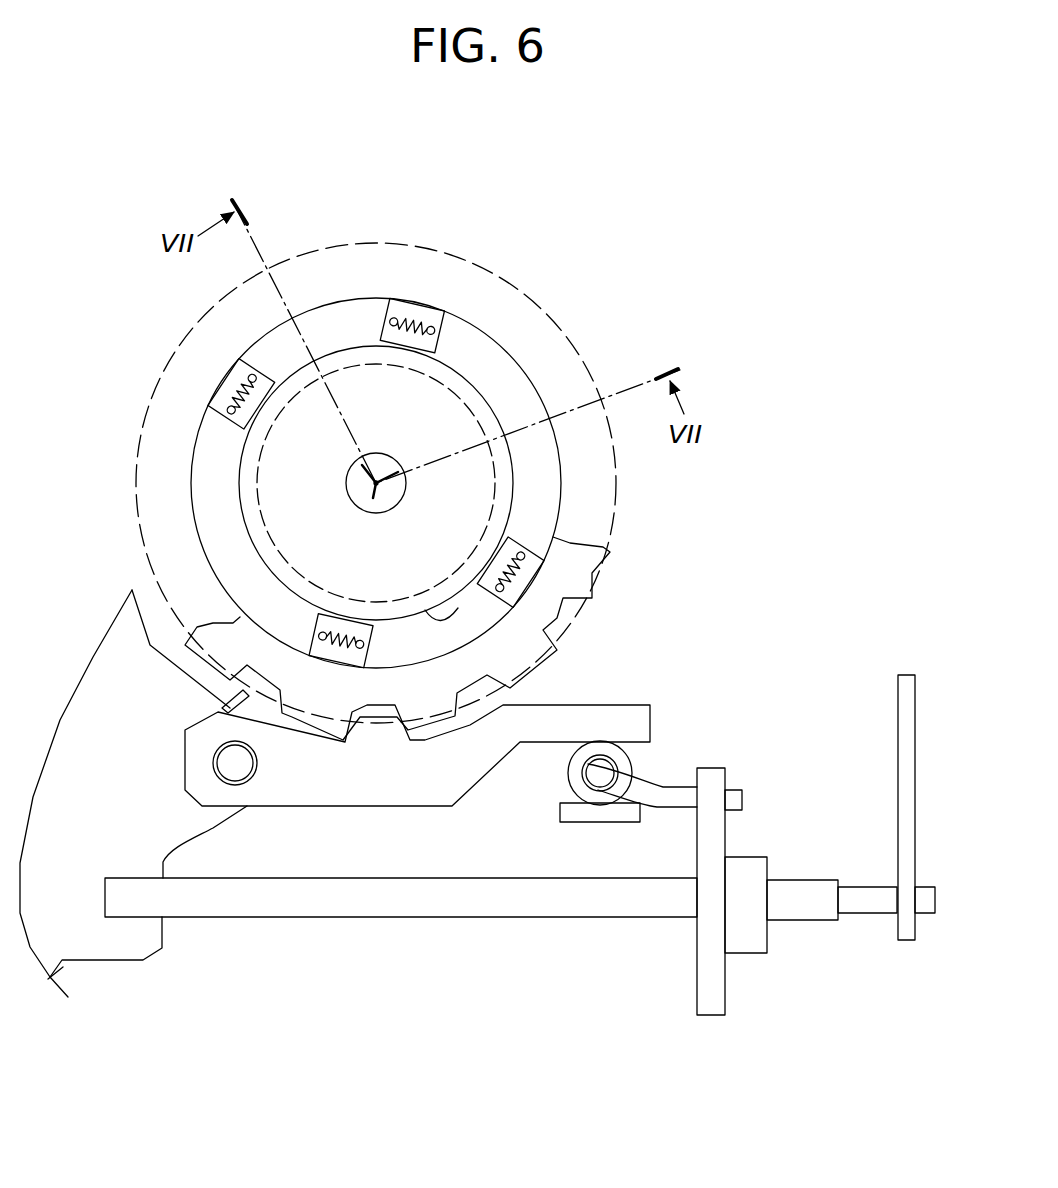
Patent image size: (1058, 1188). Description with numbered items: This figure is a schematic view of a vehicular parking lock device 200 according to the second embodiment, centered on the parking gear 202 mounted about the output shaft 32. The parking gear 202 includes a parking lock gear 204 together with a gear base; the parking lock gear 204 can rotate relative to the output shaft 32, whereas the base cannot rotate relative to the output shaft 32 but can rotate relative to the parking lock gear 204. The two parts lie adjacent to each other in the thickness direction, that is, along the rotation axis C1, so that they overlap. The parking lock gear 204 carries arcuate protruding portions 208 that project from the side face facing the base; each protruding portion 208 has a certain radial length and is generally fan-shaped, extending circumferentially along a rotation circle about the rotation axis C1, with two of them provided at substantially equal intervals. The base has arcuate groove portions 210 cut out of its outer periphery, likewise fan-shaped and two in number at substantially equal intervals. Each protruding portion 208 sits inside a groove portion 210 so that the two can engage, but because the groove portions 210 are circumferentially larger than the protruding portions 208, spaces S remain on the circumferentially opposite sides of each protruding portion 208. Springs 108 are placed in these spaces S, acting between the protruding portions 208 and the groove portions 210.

The output shaft 32 is at (390, 469).
The vehicular parking lock device 200 is at (582, 268).
The parking gear 202 is at (669, 555).
The parking lock gear 204 is at (182, 470).
The protruding portion 208 is at (433, 643).
The groove portion 210 is at (455, 618).
The spring 108 is at (358, 650).
The space S is at (325, 650).
The rotation axis C1 is at (352, 505).